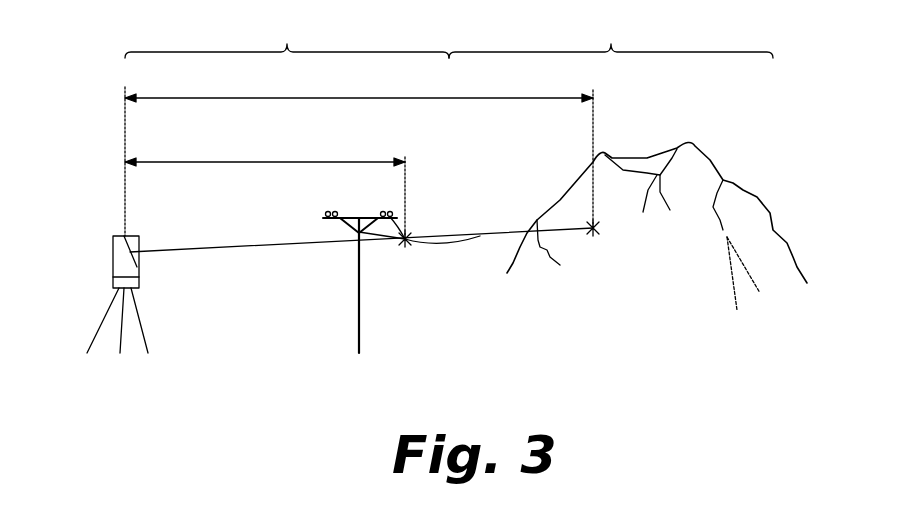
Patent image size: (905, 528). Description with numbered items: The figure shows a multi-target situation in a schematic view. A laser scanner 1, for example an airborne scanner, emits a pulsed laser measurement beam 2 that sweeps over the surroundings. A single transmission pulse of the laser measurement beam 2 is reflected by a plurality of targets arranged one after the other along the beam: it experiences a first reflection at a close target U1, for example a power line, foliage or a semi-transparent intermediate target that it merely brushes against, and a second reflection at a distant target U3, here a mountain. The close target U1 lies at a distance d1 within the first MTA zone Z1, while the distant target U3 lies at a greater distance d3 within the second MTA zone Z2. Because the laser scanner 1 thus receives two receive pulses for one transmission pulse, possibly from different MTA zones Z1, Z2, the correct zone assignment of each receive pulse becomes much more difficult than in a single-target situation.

The laser scanner 1 is at (112, 263).
The laser measurement beam 2 is at (234, 248).
The close target U1 is at (408, 247).
The distant target U3 is at (596, 236).
The distance of the close target d1 is at (265, 149).
The distance of the distant target d3 is at (359, 84).
The first MTA zone Z1 is at (287, 35).
The second MTA zone Z2 is at (611, 35).